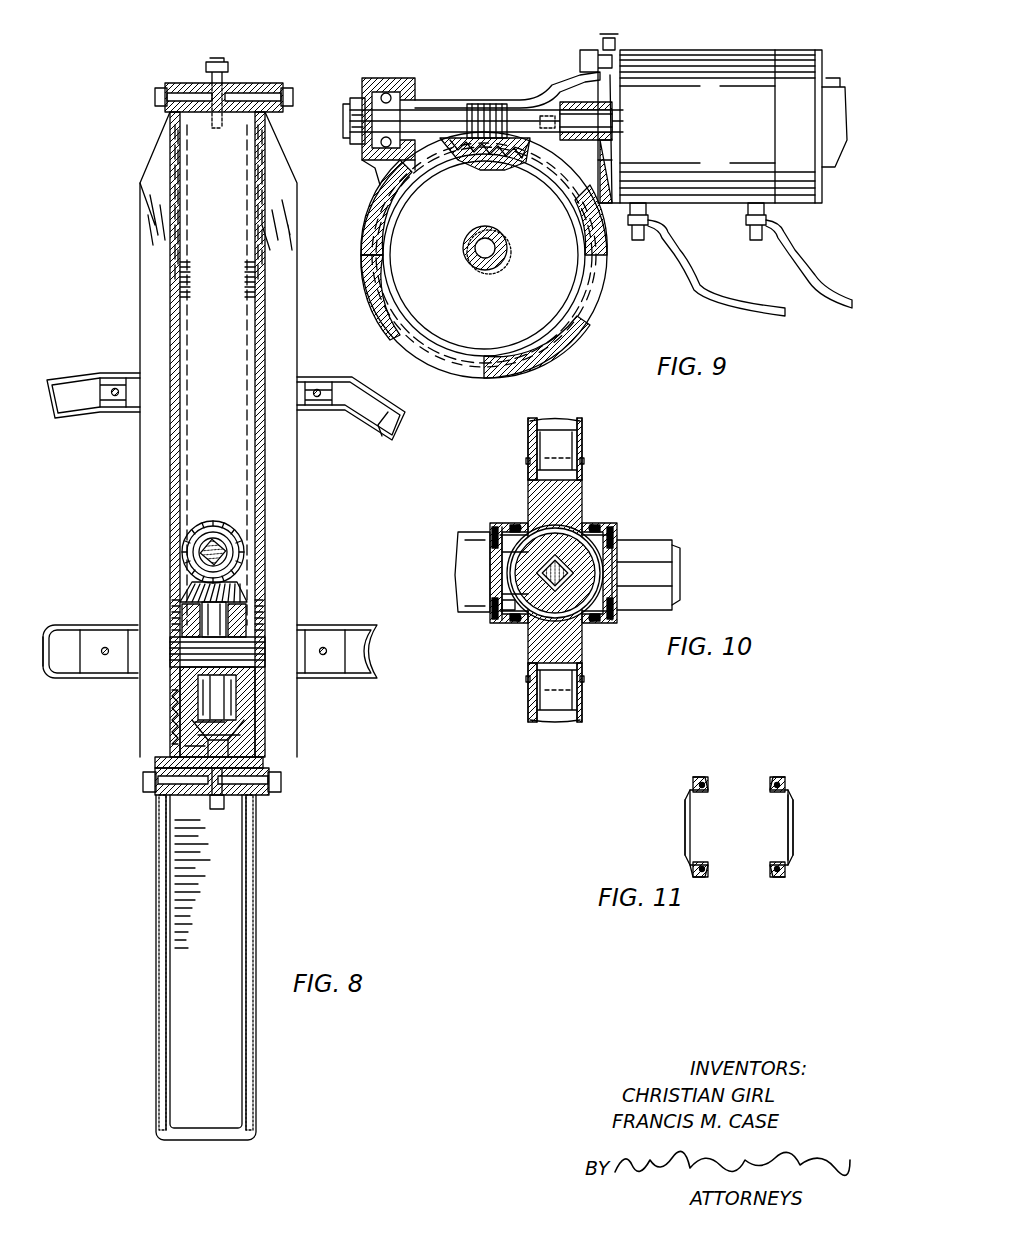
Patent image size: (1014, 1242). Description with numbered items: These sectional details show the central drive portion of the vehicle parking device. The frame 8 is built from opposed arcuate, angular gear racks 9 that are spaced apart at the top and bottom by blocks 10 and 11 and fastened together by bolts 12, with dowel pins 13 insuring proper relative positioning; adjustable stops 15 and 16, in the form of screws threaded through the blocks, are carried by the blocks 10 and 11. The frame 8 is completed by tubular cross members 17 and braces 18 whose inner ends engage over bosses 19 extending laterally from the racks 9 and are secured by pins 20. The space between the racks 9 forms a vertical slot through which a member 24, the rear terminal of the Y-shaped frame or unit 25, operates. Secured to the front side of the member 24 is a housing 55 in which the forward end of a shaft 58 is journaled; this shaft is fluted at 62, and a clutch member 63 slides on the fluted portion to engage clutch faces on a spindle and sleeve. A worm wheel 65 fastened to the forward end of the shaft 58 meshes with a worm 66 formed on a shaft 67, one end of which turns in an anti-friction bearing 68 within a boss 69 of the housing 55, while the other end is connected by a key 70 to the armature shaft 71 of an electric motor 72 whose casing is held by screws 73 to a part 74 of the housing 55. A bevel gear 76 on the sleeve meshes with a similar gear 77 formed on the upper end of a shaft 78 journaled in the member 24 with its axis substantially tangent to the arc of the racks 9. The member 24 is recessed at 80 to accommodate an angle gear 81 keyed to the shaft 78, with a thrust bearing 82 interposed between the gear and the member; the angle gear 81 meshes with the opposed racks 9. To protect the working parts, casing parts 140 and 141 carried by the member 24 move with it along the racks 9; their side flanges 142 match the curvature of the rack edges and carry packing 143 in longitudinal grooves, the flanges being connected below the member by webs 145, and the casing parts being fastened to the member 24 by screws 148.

In FIG. 8, the frame 8 is at (392, 405).
In FIG. 10, the frame 8 is at (520, 722).
In FIG. 8, the arcuate angular gear racks 9 is at (172, 275).
In FIG. 10, the arcuate angular gear racks 9 is at (540, 525).
In FIG. 8, the block 10 is at (212, 68).
In FIG. 8, the block 11 is at (212, 800).
In FIG. 8, the bolts 12 is at (155, 92).
In FIG. 8, the dowel pins 13 is at (183, 83).
In FIG. 8, the adjustable stop 15 is at (218, 128).
In FIG. 8, the adjustable stop 16 is at (263, 760).
In FIG. 8, the tubular cross members 17 is at (45, 668).
In FIG. 10, the tubular cross members 17 is at (582, 425).
In FIG. 8, the braces 18 is at (70, 375).
In FIG. 8, the bosses 19 is at (113, 375).
In FIG. 10, the bosses 19 is at (537, 440).
In FIG. 8, the pins 20 is at (115, 396).
In FIG. 10, the pins 20 is at (584, 462).
In FIG. 8, the member 24 is at (190, 725).
In FIG. 10, the member 24 is at (660, 545).
In FIG. 8, the Y-shaped frame or unit 25 is at (232, 742).
In FIG. 10, the Y-shaped frame or unit 25 is at (676, 590).
In FIG. 9, the housing 55 is at (570, 330).
In FIG. 8, the shaft 58 is at (208, 548).
In FIG. 9, the shaft 58 is at (478, 268).
In FIG. 8, the fluted portion 62 is at (233, 532).
In FIG. 8, the clutch member 63 is at (227, 552).
In FIG. 9, the worm wheel 65 is at (512, 160).
In FIG. 9, the worm 66 is at (490, 104).
In FIG. 9, the shaft 67 is at (440, 108).
In FIG. 9, the anti-friction bearing 68 is at (395, 78).
In FIG. 9, the boss 69 is at (362, 175).
In FIG. 9, the key 70 is at (543, 100).
In FIG. 9, the armature shaft 71 is at (615, 112).
In FIG. 9, the electric motor 72 is at (715, 70).
In FIG. 9, the screws 73 is at (582, 52).
In FIG. 9, the part of the housing 74 is at (608, 34).
In FIG. 8, the bevel gear 76 is at (212, 521).
In FIG. 8, the bevel gear 77 is at (185, 590).
In FIG. 8, the shaft 78 is at (238, 698).
In FIG. 10, the shaft 78 is at (508, 560).
In FIG. 10, the recess 80 is at (490, 538).
In FIG. 8, the angle gear 81 is at (262, 642).
In FIG. 10, the angle gear 81 is at (506, 600).
In FIG. 8, the thrust bearing 82 is at (172, 708).
In FIG. 8, the casing part 140 is at (232, 918).
In FIG. 10, the casing part 140 is at (510, 530).
In FIG. 11, the casing part 140 is at (685, 828).
In FIG. 10, the casing part 141 is at (618, 530).
In FIG. 11, the casing part 141 is at (793, 828).
In FIG. 10, the side flanges 142 is at (512, 525).
In FIG. 11, the side flanges 142 is at (772, 777).
In FIG. 8, the packing 143 is at (160, 1068).
In FIG. 10, the packing 143 is at (592, 522).
In FIG. 11, the packing 143 is at (772, 785).
In FIG. 8, the webs 145 is at (190, 1002).
In FIG. 11, the webs 145 is at (685, 810).
In FIG. 10, the screws 148 is at (492, 530).